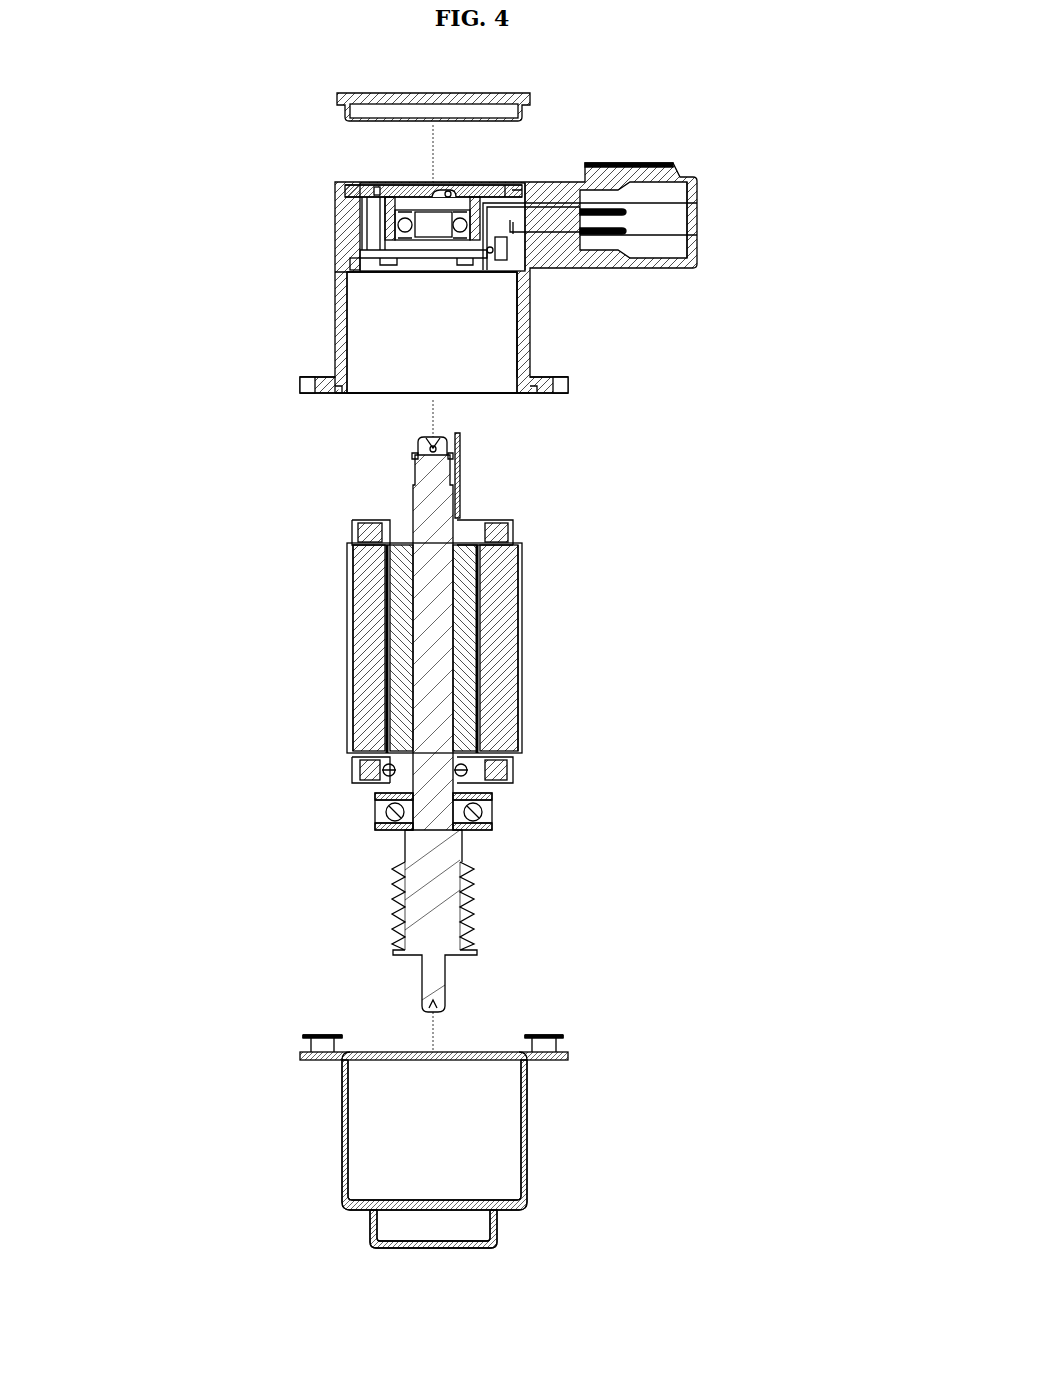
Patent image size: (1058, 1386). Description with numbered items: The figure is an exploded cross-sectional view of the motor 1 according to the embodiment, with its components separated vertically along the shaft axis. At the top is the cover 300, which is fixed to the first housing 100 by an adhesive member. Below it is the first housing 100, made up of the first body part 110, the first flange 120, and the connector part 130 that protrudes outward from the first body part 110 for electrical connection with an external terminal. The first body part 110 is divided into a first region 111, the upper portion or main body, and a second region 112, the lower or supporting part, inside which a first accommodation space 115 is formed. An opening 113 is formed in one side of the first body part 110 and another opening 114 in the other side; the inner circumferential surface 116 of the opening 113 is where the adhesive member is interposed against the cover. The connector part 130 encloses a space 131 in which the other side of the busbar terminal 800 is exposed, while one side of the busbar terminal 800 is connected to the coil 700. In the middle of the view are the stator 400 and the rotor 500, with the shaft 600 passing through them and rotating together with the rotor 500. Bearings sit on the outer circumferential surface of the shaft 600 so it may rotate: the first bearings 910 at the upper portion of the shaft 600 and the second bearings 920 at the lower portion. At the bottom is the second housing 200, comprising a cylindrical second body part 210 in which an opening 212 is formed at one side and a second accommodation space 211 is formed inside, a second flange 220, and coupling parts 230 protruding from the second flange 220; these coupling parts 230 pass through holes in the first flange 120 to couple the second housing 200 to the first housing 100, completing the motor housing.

The motor 1 is at (226, 81).
The first housing 100 is at (513, 279).
The first body part 110 is at (484, 300).
The first region 111 is at (498, 228).
The second region 112 is at (522, 324).
The opening 113 is at (401, 185).
The opening 114 is at (378, 398).
The first accommodation space 115 is at (380, 322).
The inner circumferential surface 116 is at (514, 187).
The first flange 120 is at (552, 385).
The connector part 130 is at (658, 236).
The space 131 is at (671, 228).
The second housing 200 is at (435, 1124).
The second body part 210 is at (468, 1154).
The second accommodation space 211 is at (462, 1168).
The opening 212 is at (383, 1052).
The second flange 220 is at (328, 1060).
The coupling parts 230 is at (285, 1036).
The cover 300 is at (560, 90).
The stator 400 is at (497, 602).
The rotor 500 is at (466, 640).
The shaft 600 is at (440, 934).
The coil 700 is at (352, 532).
The busbar terminal 800 is at (560, 214).
The first bearings 910 is at (372, 221).
The second bearings 920 is at (520, 817).